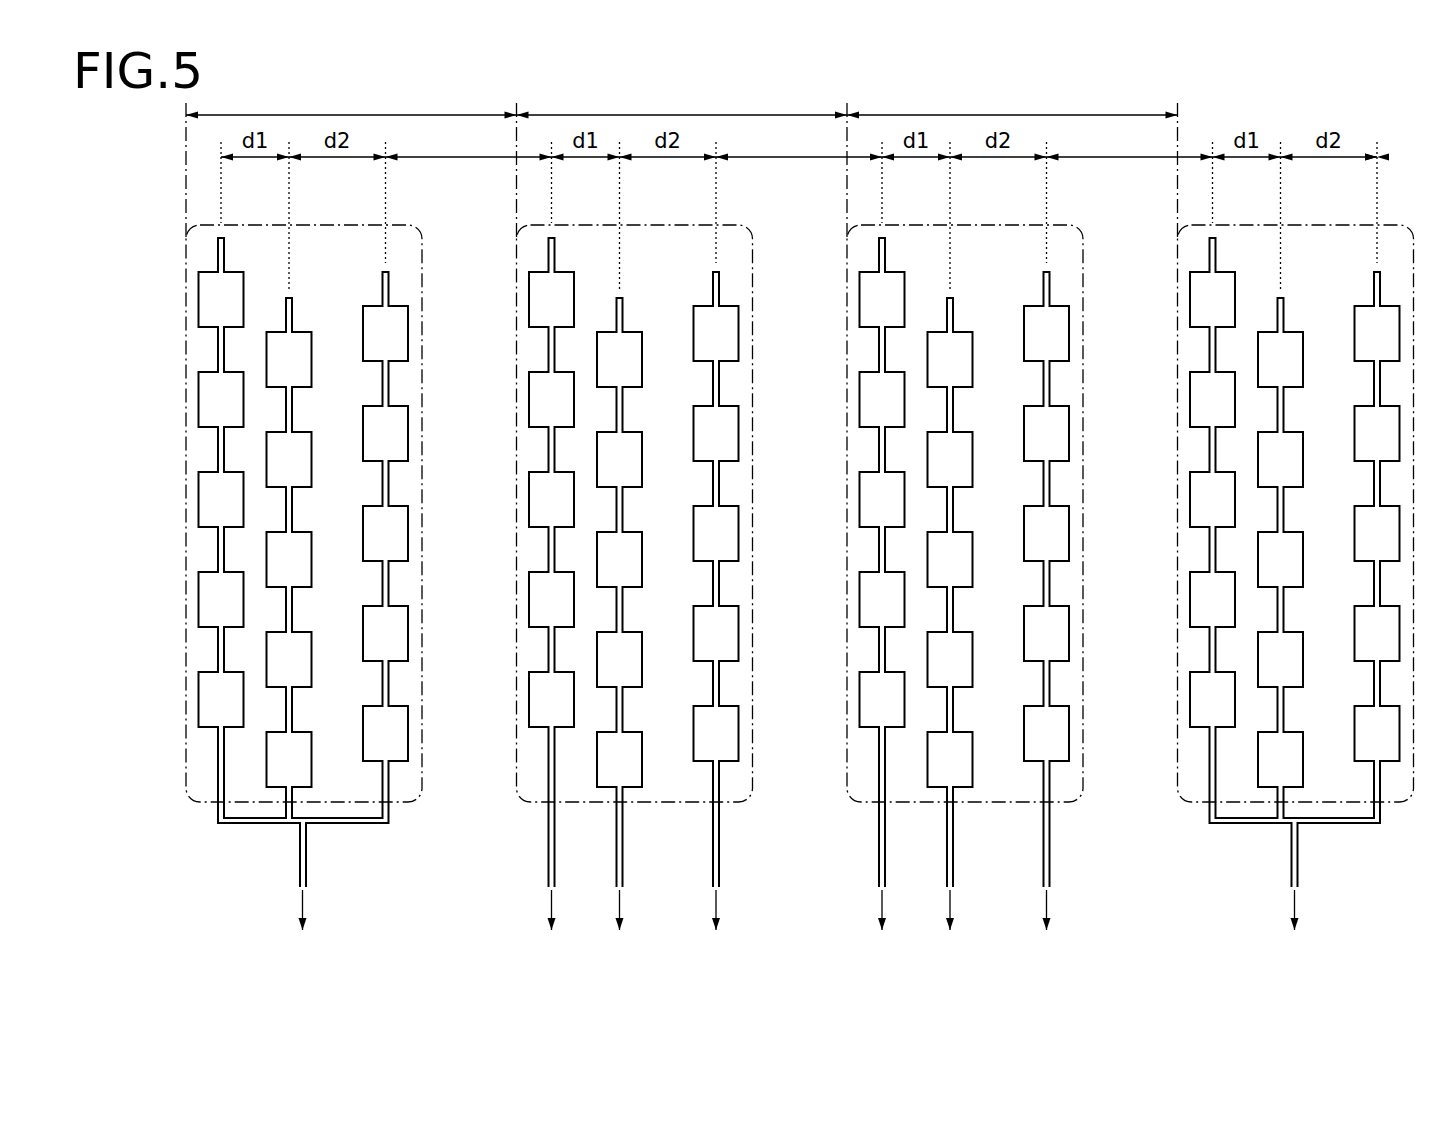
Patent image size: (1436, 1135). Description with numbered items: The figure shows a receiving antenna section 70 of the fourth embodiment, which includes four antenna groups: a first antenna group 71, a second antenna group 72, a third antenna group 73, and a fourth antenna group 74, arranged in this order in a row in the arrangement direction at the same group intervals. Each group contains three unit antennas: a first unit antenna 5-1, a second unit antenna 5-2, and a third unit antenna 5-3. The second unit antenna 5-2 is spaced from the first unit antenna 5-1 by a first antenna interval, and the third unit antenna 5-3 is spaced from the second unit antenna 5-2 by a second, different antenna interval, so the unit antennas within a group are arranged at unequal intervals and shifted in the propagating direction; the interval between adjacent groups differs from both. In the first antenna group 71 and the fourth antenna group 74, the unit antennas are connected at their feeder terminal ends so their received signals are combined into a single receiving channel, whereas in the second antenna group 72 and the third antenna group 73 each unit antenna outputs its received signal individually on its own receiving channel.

The receiving antenna section 70 is at (157, 187).
The first antenna group 71 is at (202, 802).
The second antenna group 72 is at (757, 757).
The third antenna group 73 is at (1085, 755).
The fourth antenna group 74 is at (1398, 802).
The first unit antenna 5-1 is at (729, 496).
The second unit antenna 5-2 is at (798, 496).
The third unit antenna 5-3 is at (893, 496).